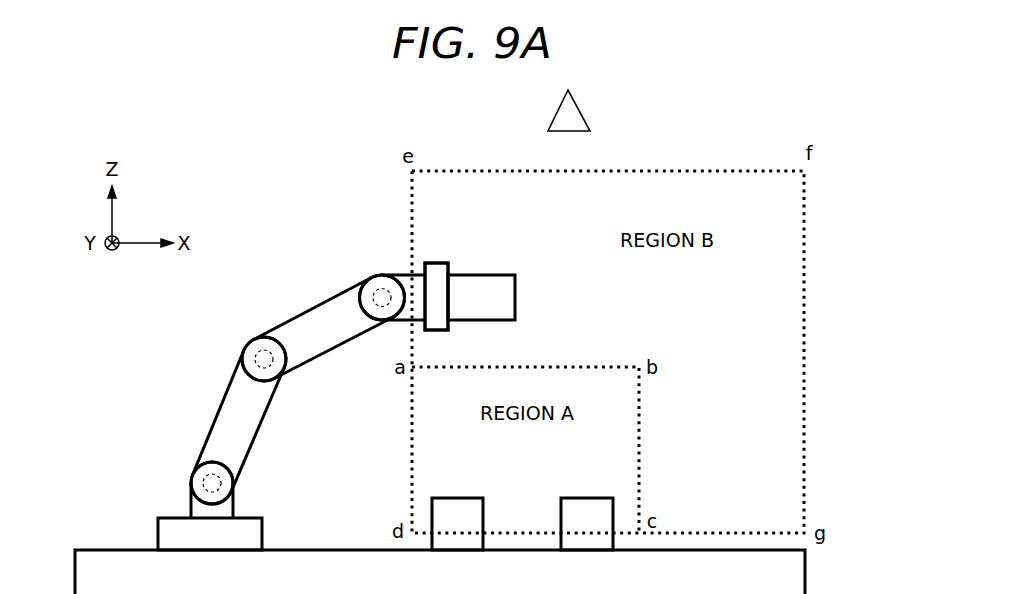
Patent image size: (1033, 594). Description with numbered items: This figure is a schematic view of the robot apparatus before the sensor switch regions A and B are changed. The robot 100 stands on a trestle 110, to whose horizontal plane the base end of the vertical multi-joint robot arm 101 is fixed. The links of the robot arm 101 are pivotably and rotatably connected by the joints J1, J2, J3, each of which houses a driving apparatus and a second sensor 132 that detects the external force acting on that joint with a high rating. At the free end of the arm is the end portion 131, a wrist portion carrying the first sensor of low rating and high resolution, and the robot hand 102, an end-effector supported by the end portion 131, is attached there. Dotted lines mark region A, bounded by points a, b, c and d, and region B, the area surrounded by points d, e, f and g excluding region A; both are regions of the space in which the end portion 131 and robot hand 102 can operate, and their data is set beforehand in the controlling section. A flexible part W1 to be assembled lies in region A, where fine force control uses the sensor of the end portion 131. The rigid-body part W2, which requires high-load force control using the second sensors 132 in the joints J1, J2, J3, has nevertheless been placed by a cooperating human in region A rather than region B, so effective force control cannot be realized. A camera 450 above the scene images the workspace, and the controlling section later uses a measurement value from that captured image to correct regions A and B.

The robot 100 is at (273, 187).
The robot arm 101 is at (302, 313).
The robot hand 102 is at (483, 273).
The end portion 131 is at (436, 330).
The second sensor 132 is at (370, 293).
The trestle 110 is at (805, 570).
The camera 450 is at (580, 108).
The joint J1 is at (192, 483).
The joint J2 is at (246, 350).
The joint J3 is at (378, 277).
The part W1 is at (459, 498).
The part W2 is at (588, 498).